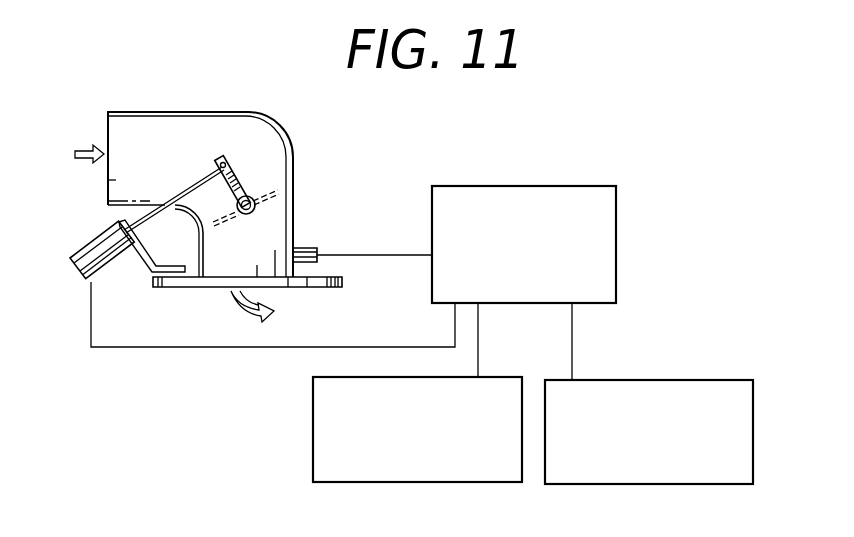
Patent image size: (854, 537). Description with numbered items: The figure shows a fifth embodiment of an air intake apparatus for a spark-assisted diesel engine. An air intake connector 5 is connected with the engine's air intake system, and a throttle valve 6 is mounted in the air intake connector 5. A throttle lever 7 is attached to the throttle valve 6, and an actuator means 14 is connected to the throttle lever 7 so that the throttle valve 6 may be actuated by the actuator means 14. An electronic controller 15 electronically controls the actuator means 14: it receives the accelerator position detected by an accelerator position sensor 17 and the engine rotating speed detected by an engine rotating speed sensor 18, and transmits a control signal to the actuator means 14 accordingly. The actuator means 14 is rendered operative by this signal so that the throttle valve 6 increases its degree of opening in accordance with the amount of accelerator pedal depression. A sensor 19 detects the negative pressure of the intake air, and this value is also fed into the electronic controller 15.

The air intake connector 5 is at (242, 114).
The throttle valve 6 is at (258, 208).
The throttle lever 7 is at (238, 185).
The actuator means 14 is at (97, 248).
The electronic controller 15 is at (480, 186).
The accelerator position sensor 17 is at (313, 432).
The engine rotating speed sensor 18 is at (627, 379).
The sensor 19 is at (311, 248).